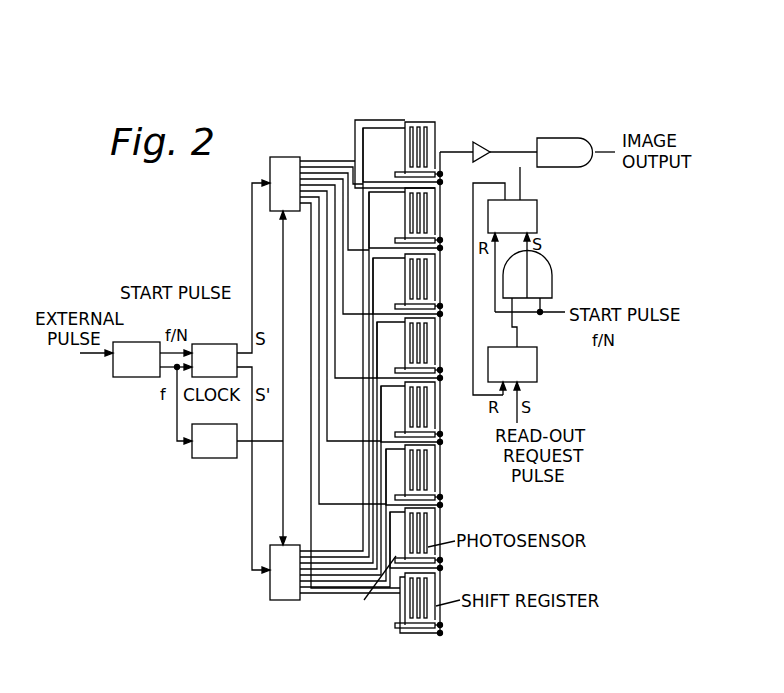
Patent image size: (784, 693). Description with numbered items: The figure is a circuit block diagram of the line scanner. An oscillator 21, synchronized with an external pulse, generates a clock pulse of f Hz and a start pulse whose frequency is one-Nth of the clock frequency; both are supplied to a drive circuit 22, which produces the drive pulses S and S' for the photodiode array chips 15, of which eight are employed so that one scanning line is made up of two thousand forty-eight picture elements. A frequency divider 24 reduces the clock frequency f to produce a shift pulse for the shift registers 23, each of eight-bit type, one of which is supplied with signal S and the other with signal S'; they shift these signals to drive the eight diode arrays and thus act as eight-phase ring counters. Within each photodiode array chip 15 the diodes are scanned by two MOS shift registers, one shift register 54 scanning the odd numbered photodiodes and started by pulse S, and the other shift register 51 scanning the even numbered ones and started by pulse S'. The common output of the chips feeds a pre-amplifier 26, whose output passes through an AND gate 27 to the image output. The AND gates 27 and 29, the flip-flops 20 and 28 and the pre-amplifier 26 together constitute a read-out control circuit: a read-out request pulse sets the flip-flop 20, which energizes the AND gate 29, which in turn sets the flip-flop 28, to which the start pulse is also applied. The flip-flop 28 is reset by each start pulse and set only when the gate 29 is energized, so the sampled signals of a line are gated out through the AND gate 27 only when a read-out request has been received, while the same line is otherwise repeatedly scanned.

The photodiode array chip 15 is at (394, 387).
The flip-flop 20 is at (537, 375).
The oscillator 21 is at (131, 378).
The drive circuit 22 is at (209, 343).
The shift register 23 is at (289, 157).
The frequency divider 24 is at (208, 459).
The pre-amplifier 26 is at (486, 142).
The AND gate 27 is at (580, 170).
The flip-flop 28 is at (537, 228).
The AND gate 29 is at (552, 283).
The MOS shift register 51 is at (396, 636).
The MOS shift register 54 is at (441, 636).